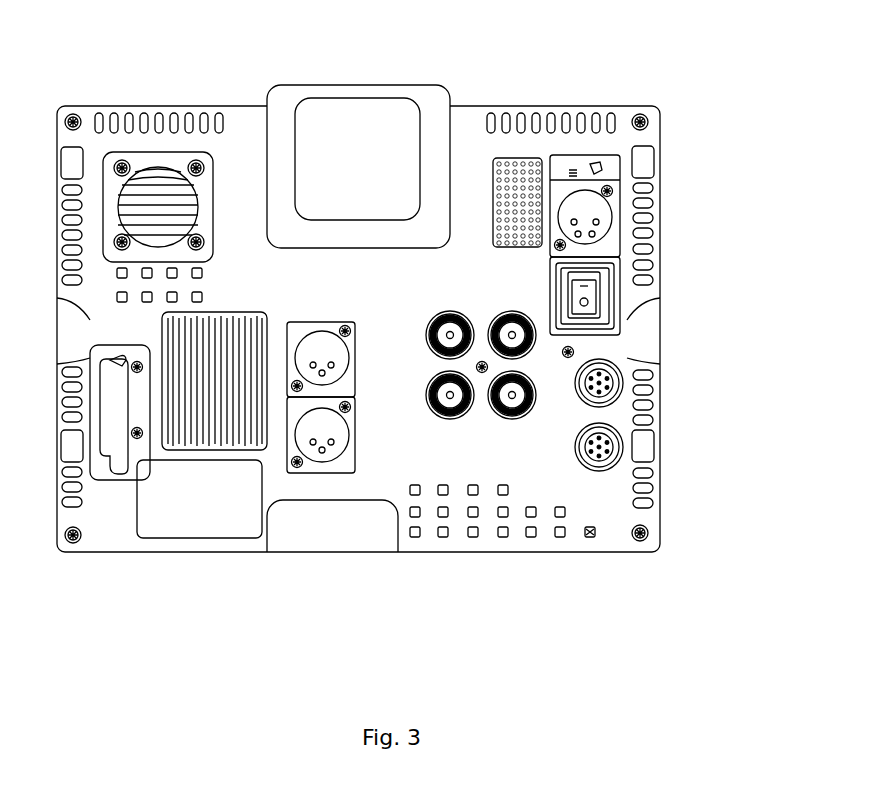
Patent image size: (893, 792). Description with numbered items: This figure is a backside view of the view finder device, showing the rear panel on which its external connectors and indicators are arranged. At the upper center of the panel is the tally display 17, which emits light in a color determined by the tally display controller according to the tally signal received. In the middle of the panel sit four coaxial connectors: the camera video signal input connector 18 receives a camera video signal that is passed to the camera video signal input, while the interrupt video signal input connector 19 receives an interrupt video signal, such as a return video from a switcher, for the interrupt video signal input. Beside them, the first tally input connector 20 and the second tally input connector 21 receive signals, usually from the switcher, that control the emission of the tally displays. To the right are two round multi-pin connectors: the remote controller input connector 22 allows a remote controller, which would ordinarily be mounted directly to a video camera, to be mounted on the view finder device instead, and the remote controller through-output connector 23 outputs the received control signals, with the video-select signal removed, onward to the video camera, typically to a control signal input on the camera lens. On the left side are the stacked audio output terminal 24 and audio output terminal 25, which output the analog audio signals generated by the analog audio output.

The tally display 17 is at (395, 155).
The camera video signal input connector 18 is at (470, 314).
The interrupt video signal input connector 19 is at (452, 420).
The first tally input connector 20 is at (535, 318).
The second tally input connector 21 is at (507, 420).
The remote controller input connector 22 is at (618, 358).
The remote controller through-output connector 23 is at (622, 430).
The audio output terminal 24 is at (290, 367).
The audio output terminal 25 is at (330, 467).